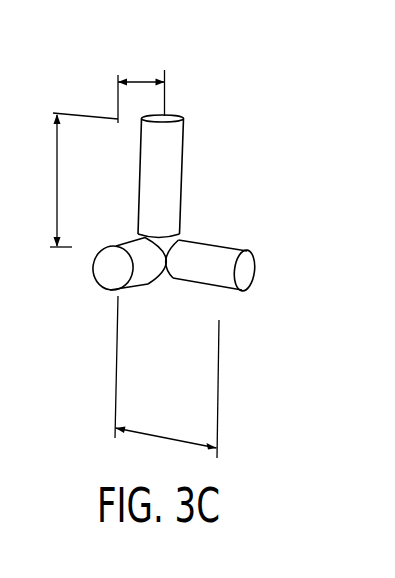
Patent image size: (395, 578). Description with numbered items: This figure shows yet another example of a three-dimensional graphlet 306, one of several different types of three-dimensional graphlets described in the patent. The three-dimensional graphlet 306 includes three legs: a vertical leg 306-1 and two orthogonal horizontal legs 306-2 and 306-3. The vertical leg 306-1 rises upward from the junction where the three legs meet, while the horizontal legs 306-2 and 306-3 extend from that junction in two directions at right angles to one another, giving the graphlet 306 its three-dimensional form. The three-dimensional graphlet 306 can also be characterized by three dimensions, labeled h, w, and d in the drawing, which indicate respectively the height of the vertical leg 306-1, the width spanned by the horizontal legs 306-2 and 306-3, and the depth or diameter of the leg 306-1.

The 3D graphlet 306 is at (92, 84).
The vertical leg 306-1 is at (183, 174).
The horizontal leg 306-2 is at (123, 243).
The horizontal leg 306-3 is at (218, 245).